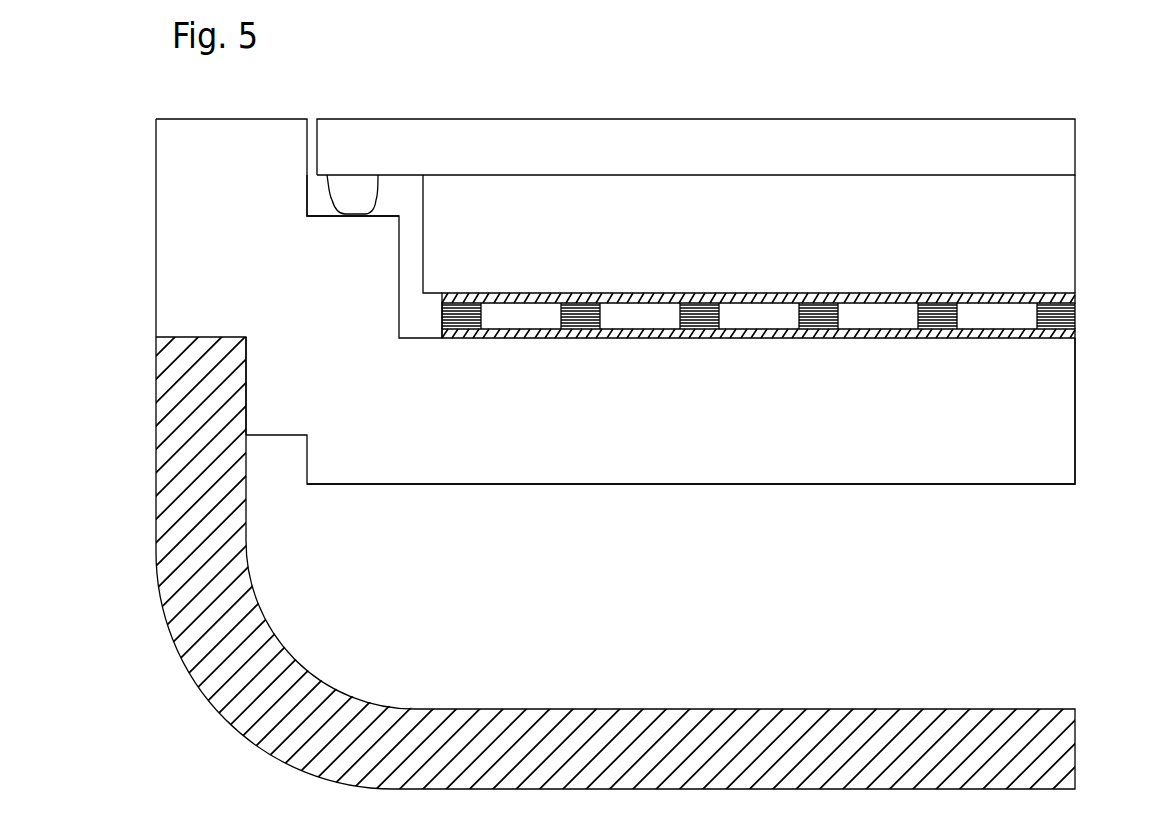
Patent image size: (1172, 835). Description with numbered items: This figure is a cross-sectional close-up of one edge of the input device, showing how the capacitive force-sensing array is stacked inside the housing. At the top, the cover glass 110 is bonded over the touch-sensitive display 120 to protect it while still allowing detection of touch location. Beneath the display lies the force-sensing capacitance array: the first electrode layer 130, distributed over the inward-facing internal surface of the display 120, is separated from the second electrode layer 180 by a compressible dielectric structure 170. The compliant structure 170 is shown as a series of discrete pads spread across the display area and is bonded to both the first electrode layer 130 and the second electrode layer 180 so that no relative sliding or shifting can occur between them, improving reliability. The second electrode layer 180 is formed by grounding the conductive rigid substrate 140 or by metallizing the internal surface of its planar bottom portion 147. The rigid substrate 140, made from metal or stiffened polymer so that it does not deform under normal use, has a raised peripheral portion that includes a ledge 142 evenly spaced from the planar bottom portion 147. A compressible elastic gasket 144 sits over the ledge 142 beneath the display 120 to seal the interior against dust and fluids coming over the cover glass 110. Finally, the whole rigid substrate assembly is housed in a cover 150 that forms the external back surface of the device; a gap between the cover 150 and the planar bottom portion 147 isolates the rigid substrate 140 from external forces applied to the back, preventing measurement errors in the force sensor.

The cover glass 110 is at (673, 148).
The touch-sensitive display 120 is at (825, 245).
The first electrode layer 130 is at (527, 303).
The rigid substrate 140 is at (368, 443).
The ledge 142 is at (358, 217).
The compressible elastic gasket 144 is at (357, 174).
The planar bottom portion 147 is at (1047, 413).
The cover 150 is at (867, 727).
The compressible dielectric structure 170 is at (704, 333).
The second electrode layer 180 is at (968, 340).